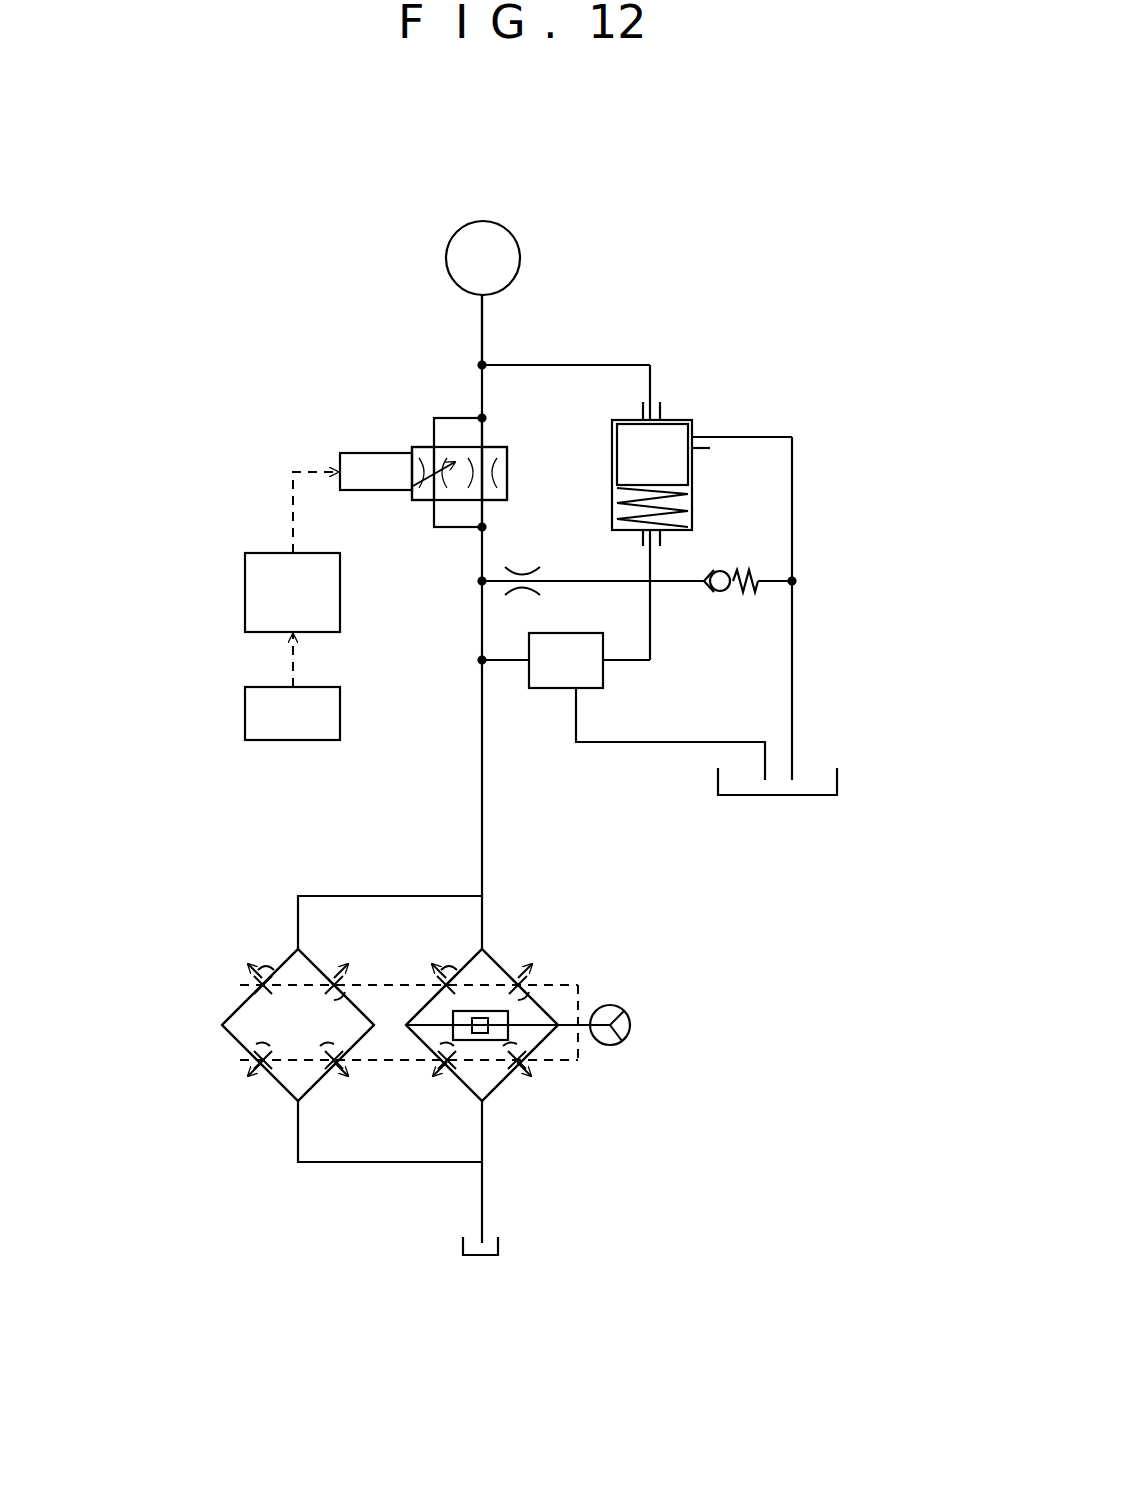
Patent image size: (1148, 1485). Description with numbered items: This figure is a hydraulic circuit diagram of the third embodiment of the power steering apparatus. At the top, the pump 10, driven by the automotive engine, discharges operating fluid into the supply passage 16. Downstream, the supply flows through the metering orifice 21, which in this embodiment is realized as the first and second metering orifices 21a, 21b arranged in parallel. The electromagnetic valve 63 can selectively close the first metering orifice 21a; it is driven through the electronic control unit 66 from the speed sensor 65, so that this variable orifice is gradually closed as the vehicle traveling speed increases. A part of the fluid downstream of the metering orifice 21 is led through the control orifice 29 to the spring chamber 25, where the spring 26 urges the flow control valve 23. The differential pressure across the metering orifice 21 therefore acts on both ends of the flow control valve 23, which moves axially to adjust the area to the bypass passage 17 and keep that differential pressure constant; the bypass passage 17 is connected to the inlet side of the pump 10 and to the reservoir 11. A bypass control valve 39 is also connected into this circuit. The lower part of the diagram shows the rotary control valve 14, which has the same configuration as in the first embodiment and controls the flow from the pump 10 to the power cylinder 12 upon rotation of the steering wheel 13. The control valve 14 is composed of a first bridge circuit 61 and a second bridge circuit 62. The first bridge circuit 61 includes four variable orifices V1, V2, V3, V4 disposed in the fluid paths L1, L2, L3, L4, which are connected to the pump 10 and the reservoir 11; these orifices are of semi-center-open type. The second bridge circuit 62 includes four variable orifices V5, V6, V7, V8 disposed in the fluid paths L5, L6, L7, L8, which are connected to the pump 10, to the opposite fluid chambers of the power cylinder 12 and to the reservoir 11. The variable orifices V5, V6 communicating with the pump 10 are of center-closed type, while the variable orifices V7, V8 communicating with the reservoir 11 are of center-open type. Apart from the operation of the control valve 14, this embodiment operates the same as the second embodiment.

The pump 10 is at (512, 248).
The supply passage 16 is at (482, 336).
The metering orifice 21 is at (452, 512).
The first metering orifice 21a is at (412, 463).
The second metering orifice 21b is at (498, 467).
The electromagnetic valve 63 is at (376, 485).
The electronic control unit 66 is at (245, 605).
The speed sensor 65 is at (275, 728).
The bypass passage 17 is at (703, 430).
The flow control valve 23 is at (670, 437).
The spring chamber 25 is at (690, 503).
The spring 26 is at (688, 528).
The control orifice 29 is at (527, 566).
The bypass control valve 39 is at (592, 675).
The reservoir 11 is at (768, 800).
The rotary control valve 14 is at (318, 885).
The first bridge circuit 61 is at (258, 940).
The second bridge circuit 62 is at (548, 996).
The power cylinder 12 is at (485, 1045).
The steering wheel 13 is at (622, 1012).
The variable orifice V1 is at (238, 965).
The variable orifice V2 is at (346, 968).
The variable orifice V3 is at (245, 1077).
The variable orifice V4 is at (343, 1077).
The variable orifice V5 is at (430, 965).
The variable orifice V6 is at (530, 968).
The variable orifice V7 is at (429, 1077).
The variable orifice V8 is at (542, 1074).
The fluid path L1 is at (230, 1010).
The fluid path L2 is at (305, 955).
The fluid path L3 is at (232, 1033).
The fluid path L4 is at (317, 1100).
The fluid path L5 is at (468, 960).
The fluid path L6 is at (495, 960).
The fluid path L7 is at (457, 1093).
The fluid path L8 is at (518, 1085).